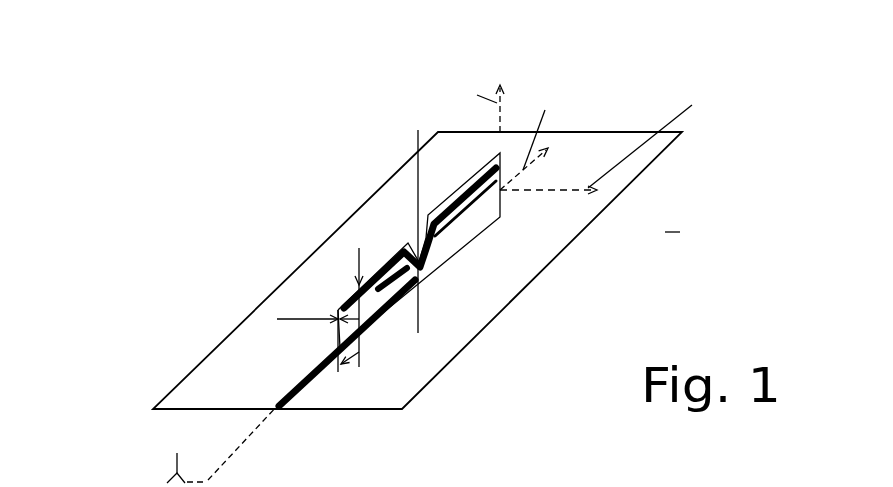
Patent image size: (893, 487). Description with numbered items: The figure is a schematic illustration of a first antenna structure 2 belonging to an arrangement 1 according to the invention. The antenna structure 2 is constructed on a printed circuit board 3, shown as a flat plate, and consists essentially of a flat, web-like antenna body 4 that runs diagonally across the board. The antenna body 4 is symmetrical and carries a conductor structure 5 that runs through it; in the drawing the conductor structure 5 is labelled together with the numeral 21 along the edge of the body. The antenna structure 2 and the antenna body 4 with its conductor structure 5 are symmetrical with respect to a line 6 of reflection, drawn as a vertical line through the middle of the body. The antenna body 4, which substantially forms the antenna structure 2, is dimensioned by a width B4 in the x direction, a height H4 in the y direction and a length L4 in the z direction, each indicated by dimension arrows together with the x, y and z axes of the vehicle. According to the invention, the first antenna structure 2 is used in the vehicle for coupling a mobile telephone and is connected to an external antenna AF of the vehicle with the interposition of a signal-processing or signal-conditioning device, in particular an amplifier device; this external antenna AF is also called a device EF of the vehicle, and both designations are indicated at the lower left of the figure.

The arrangement 1 is at (410, 250).
The first antenna structure 2 is at (443, 157).
The printed circuit board 3 is at (458, 272).
The antenna body 4 is at (342, 337).
The conductor structure 5 is at (537, 246).
The edge region 21 is at (470, 203).
The line of reflection 6 is at (418, 145).
The height of the antenna body H4 is at (360, 257).
The width of the antenna body B4 is at (297, 319).
The length of the antenna body L4 is at (455, 255).
The device of the vehicle EF is at (168, 448).
The external antenna AF is at (173, 467).